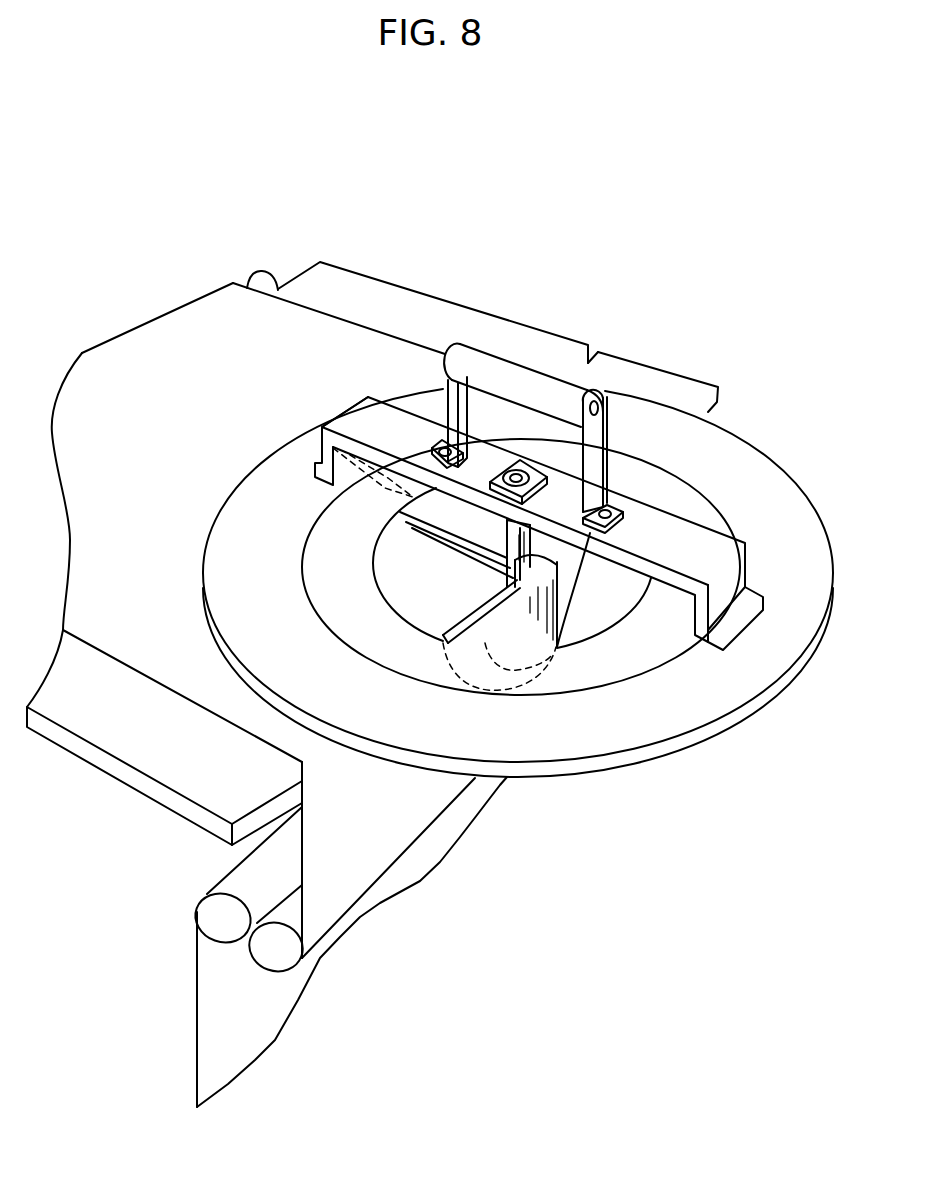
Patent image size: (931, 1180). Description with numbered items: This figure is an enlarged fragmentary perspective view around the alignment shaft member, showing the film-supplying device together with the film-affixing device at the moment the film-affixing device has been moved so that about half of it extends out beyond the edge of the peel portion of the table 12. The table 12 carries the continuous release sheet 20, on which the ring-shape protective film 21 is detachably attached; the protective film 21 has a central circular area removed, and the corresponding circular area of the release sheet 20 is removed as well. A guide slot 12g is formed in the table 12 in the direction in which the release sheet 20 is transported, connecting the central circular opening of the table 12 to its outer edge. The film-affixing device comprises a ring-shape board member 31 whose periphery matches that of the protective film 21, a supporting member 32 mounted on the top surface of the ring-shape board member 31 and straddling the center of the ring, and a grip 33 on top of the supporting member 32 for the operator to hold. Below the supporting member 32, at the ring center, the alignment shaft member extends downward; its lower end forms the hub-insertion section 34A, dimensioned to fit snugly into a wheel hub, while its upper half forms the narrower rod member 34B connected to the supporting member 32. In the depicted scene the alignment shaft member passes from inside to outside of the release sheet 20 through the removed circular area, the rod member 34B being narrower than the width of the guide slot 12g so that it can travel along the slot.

The release sheet 20 is at (337, 333).
The table 12 is at (447, 300).
The guide slot 12g is at (333, 448).
The protective film 21 is at (335, 580).
The ring-shape board member 31 is at (780, 523).
The supporting member 32 is at (675, 545).
The grip 33 is at (530, 382).
The hub-insertion section 34A is at (507, 625).
The rod member 34B is at (603, 500).